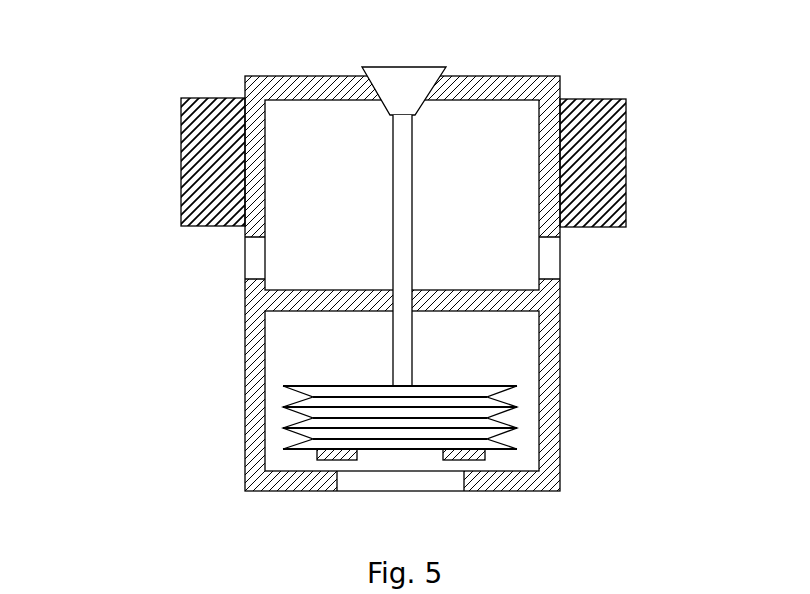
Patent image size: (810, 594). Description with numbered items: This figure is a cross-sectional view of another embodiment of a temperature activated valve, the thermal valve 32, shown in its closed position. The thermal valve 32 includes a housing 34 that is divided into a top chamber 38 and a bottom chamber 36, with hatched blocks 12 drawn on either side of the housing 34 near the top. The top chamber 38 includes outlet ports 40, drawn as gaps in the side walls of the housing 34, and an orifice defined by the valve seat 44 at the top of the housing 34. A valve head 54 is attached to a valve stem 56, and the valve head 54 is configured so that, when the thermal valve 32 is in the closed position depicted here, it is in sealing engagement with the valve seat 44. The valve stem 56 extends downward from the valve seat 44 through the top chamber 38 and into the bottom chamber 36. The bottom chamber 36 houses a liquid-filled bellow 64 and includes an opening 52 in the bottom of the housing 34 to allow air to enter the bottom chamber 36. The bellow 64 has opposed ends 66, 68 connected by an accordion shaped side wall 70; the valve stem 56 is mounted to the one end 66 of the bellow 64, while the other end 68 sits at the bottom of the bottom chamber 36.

The thermal valve 32 is at (127, 100).
The support wall 12 is at (181, 153).
The housing 34 is at (243, 472).
The bottom chamber 36 is at (380, 352).
The top chamber 38 is at (346, 211).
The outlet ports 40 is at (252, 262).
The valve seat 44 is at (436, 82).
The opening 52 is at (370, 493).
The valve head 54 is at (410, 83).
The valve stem 56 is at (410, 187).
The liquid-filled bellow 64 is at (366, 396).
The end of the bellow 66 is at (335, 386).
The end of the bellow 68 is at (410, 452).
The accordion shaped side wall 70 is at (300, 417).